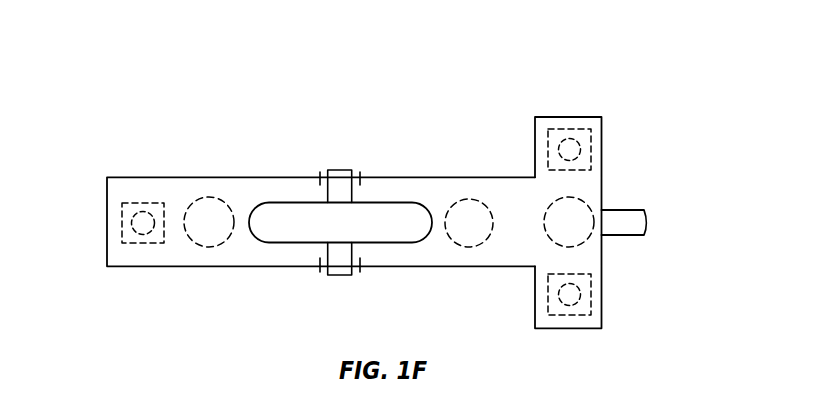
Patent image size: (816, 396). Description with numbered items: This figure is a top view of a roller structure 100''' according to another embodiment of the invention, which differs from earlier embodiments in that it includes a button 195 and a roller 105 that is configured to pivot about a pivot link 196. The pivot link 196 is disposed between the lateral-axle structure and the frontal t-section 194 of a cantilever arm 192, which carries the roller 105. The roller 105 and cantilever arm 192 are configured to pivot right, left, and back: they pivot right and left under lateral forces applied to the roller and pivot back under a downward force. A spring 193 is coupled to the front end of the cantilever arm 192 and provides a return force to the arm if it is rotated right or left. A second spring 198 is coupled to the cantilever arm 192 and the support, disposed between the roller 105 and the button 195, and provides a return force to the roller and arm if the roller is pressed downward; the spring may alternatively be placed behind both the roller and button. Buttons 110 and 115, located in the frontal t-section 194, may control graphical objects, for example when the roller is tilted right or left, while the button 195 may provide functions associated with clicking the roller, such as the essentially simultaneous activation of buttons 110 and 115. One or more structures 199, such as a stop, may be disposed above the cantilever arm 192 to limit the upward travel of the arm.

The roller structure 100''' is at (367, 207).
The cantilever arm 192 is at (460, 176).
The frontal t-section 194 is at (602, 183).
The structure 199 is at (648, 222).
The roller 105 is at (340, 222).
The button 195 is at (122, 217).
The spring 198 is at (209, 246).
The pivot link 196 is at (468, 247).
The spring 193 is at (572, 247).
The button 110 is at (590, 146).
The button 115 is at (590, 290).